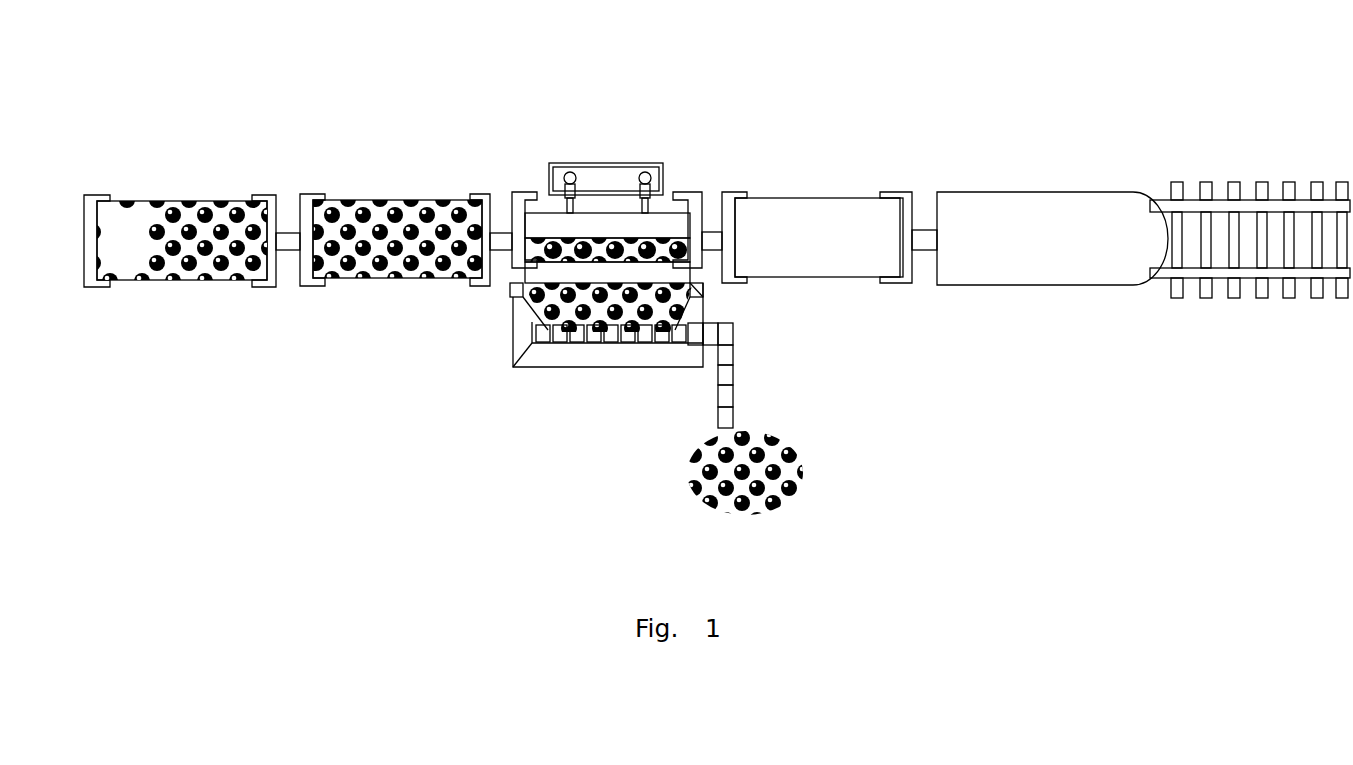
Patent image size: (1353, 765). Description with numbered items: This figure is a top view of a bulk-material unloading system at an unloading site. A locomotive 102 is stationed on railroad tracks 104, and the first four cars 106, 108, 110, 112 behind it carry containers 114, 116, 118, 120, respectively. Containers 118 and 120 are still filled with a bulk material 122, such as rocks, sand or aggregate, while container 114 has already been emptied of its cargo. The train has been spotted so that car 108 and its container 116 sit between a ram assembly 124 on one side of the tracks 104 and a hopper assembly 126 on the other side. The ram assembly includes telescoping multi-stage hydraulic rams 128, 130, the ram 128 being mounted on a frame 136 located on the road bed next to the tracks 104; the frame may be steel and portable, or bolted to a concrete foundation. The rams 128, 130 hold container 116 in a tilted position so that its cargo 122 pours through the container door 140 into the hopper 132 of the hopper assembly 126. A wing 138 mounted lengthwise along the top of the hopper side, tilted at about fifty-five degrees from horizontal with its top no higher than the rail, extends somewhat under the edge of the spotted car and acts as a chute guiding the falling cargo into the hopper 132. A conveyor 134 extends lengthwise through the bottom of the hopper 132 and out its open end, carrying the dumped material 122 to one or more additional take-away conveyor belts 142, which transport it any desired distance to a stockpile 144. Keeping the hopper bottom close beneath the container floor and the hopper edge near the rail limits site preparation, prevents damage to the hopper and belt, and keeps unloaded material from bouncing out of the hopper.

The locomotive 102 is at (1080, 230).
The railroad tracks 104 is at (1220, 205).
The car 106 is at (742, 192).
The car 108 is at (702, 193).
The car 110 is at (310, 196).
The car 112 is at (268, 198).
The container 114 is at (817, 224).
The container 116 is at (629, 208).
The container 118 is at (394, 224).
The container 120 is at (180, 230).
The bulk material 122 is at (340, 278).
The ram assembly 124 is at (645, 119).
The hopper assembly 126 is at (543, 393).
The ram 128 is at (568, 172).
The ram 130 is at (648, 175).
The hopper 132 is at (618, 375).
The conveyor 134 is at (573, 337).
The frame 136 is at (663, 170).
The wing 138 is at (513, 298).
The container door 140 is at (678, 275).
The conveyor belt 142 is at (730, 378).
The stockpile 144 is at (780, 473).